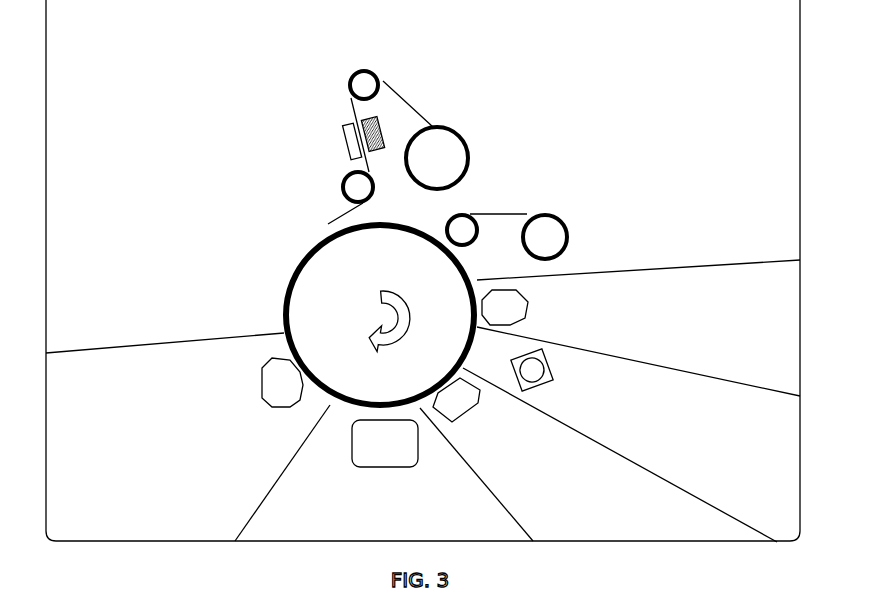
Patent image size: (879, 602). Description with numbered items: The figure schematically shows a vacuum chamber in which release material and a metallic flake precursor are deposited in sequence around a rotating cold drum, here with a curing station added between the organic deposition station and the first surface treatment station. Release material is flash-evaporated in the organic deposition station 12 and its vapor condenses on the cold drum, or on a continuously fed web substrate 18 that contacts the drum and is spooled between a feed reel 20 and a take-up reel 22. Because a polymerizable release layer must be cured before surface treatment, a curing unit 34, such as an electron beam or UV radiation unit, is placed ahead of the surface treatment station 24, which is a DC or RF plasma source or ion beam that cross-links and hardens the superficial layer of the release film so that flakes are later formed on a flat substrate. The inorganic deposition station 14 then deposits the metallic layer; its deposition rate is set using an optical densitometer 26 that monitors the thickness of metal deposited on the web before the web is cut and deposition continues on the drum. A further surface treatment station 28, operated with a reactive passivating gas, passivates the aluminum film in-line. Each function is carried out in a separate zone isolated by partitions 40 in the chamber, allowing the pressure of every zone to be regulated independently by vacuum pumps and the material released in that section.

The organic deposition station 12 is at (510, 303).
The inorganic deposition station 14 is at (392, 455).
The web substrate 18 is at (342, 199).
The feed reel 20 is at (548, 233).
The take-up reel 22 is at (450, 155).
The surface treatment station 24 is at (470, 412).
The optical densitometer 26 is at (343, 143).
The surface treatment station 28 is at (280, 378).
The curing unit 34 is at (553, 382).
The partitions 40 is at (83, 352).